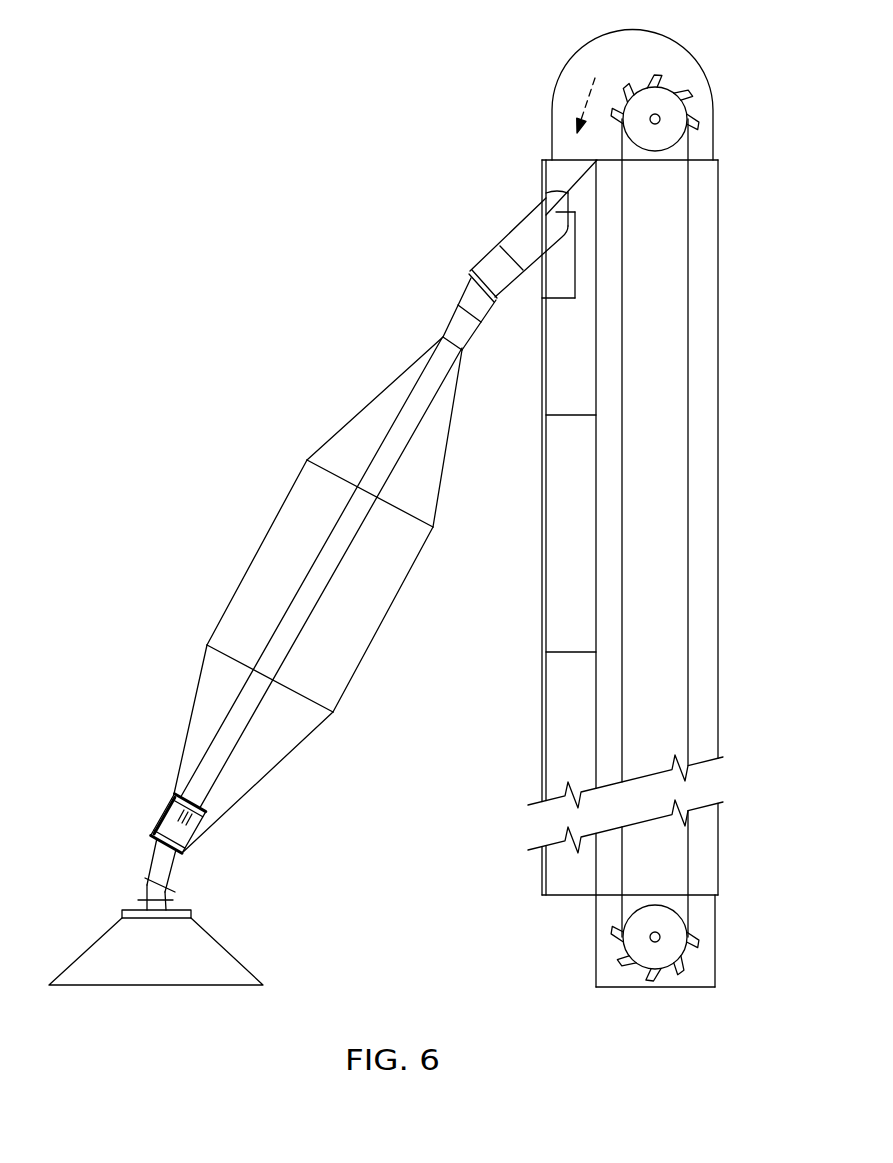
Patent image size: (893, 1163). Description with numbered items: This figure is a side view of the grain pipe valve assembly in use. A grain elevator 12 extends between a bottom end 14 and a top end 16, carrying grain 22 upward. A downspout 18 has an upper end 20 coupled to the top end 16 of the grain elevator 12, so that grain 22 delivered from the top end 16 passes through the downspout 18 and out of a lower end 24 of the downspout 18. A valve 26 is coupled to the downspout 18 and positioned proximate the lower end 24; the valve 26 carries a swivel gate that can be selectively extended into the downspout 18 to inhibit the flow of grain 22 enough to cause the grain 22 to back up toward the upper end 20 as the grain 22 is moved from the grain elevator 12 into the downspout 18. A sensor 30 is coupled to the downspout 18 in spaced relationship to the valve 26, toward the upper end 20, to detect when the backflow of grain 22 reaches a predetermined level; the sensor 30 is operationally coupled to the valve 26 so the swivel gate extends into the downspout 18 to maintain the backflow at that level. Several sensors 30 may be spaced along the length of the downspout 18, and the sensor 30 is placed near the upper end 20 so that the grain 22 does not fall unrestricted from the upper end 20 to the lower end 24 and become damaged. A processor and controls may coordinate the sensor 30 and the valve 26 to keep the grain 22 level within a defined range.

The grain elevator 12 is at (708, 405).
The bottom end 14 is at (728, 934).
The top end 16 is at (722, 80).
The downspout 18 is at (435, 368).
The upper end 20 is at (552, 222).
The grain 22 is at (573, 193).
The lower end 24 is at (180, 863).
The valve 26 is at (170, 808).
The sensor 30 is at (557, 172).